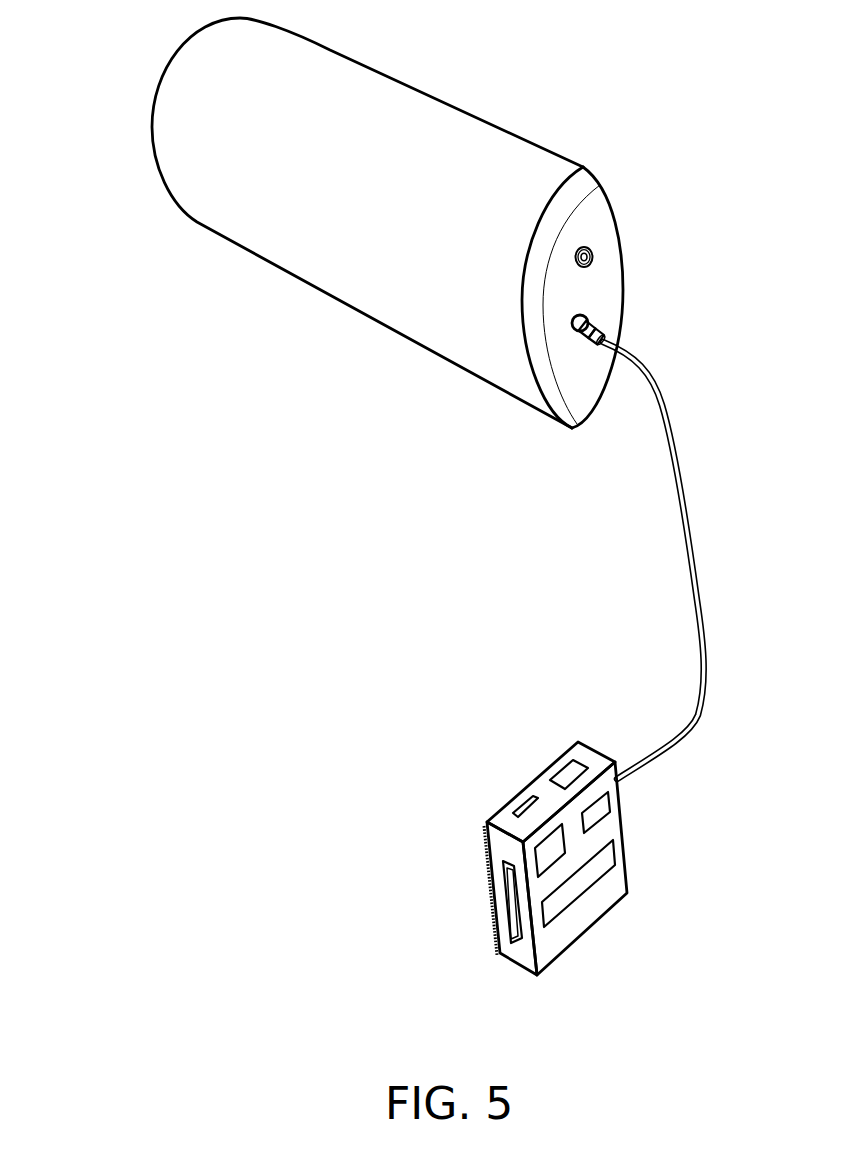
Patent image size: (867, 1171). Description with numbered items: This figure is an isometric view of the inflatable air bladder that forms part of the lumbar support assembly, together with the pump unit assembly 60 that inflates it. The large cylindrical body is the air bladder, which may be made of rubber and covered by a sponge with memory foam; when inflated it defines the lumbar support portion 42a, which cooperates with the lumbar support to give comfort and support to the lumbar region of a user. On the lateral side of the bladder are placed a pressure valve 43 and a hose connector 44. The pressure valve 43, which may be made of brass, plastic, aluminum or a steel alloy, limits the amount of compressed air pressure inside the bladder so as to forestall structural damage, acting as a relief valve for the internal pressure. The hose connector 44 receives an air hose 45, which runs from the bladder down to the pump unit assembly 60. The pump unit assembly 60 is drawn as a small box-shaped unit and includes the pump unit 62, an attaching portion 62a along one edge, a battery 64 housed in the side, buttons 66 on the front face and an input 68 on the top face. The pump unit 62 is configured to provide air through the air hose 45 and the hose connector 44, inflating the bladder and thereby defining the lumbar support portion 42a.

The lumbar support portion 42a is at (153, 134).
The pressure valve 43 is at (596, 260).
The hose connector 44 is at (593, 322).
The air hose 45 is at (687, 478).
The pump unit assembly 60 is at (556, 848).
The pump unit 62 is at (628, 887).
The attaching portion 62a is at (482, 833).
The battery 64 is at (513, 907).
The buttons 66 is at (556, 838).
The input 68 is at (522, 806).